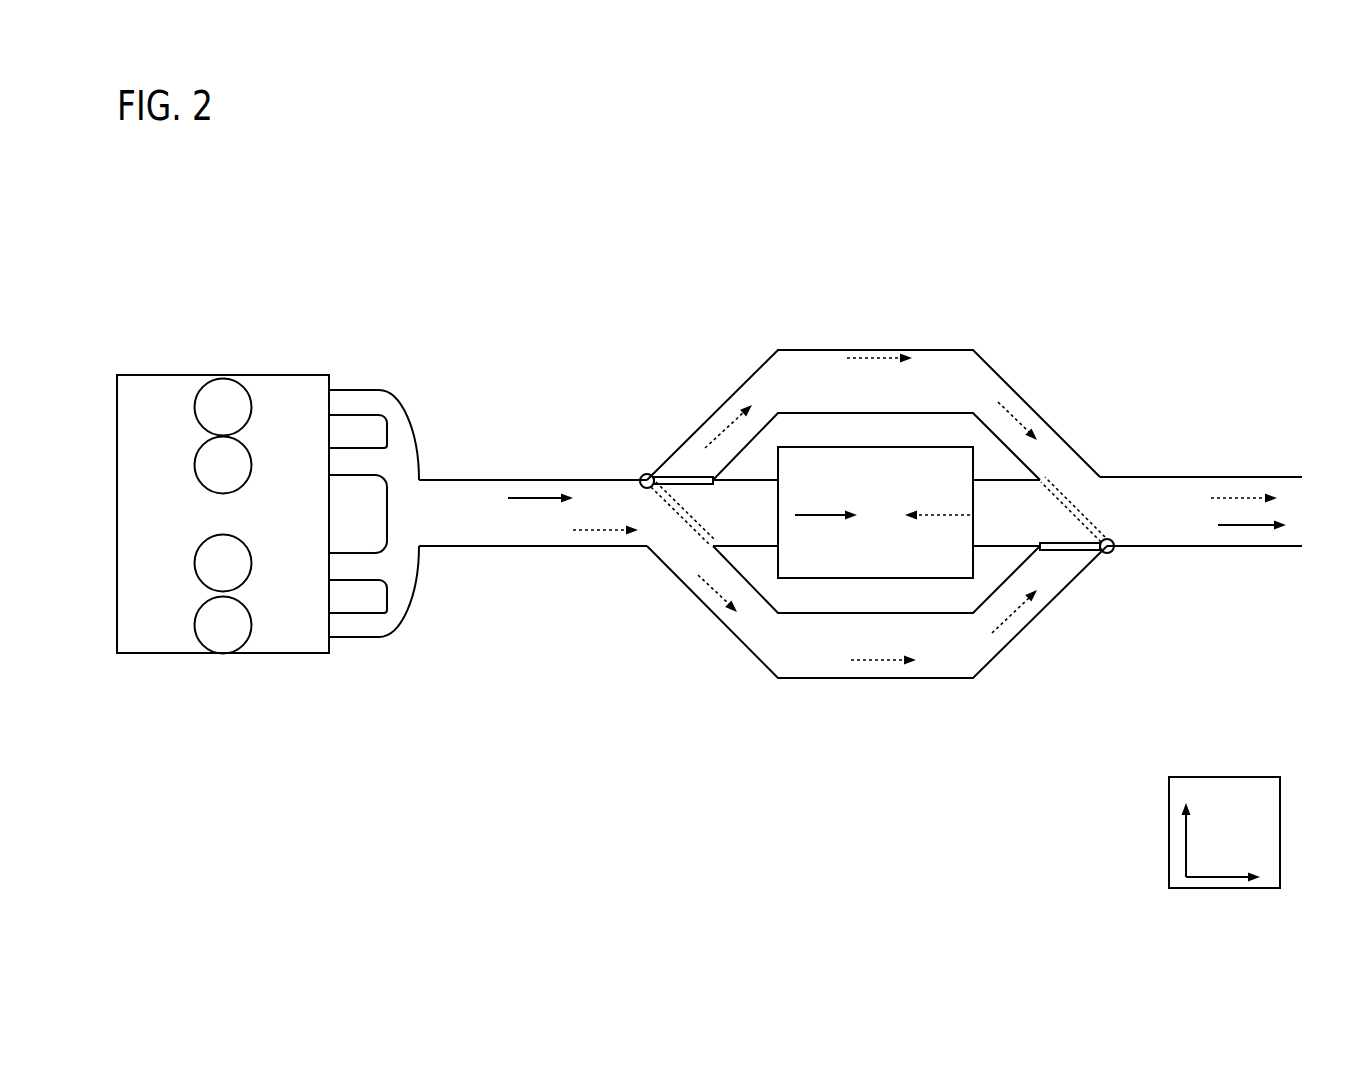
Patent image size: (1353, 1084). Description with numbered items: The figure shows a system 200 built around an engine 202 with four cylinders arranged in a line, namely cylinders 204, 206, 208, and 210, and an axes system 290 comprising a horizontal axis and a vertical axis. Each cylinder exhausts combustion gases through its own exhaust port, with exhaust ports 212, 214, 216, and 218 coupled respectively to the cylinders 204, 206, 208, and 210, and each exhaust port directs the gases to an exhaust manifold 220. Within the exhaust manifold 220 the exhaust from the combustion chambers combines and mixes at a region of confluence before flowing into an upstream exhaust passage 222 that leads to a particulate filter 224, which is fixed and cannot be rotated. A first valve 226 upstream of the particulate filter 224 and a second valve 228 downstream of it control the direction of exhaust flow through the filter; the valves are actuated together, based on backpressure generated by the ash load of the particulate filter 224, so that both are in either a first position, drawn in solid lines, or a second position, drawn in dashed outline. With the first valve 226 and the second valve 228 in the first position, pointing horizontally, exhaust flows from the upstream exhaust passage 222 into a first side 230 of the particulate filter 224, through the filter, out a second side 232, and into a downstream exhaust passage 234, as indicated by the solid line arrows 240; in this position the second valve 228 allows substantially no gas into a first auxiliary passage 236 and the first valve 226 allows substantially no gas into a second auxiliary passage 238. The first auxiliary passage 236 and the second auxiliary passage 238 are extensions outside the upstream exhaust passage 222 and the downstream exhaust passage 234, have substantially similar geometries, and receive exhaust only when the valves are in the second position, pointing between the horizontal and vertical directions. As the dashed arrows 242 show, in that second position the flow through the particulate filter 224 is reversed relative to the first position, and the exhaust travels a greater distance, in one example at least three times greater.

The system 200 is at (316, 204).
The engine 202 is at (153, 375).
The cylinder 204 is at (237, 417).
The cylinder 206 is at (237, 475).
The cylinder 208 is at (237, 573).
The cylinder 210 is at (237, 635).
The exhaust port 212 is at (343, 390).
The exhaust port 214 is at (335, 477).
The exhaust port 216 is at (332, 552).
The exhaust port 218 is at (343, 637).
The exhaust manifold 220 is at (459, 647).
The upstream exhaust passage 222 is at (530, 540).
The particulate filter 224 is at (891, 491).
The first valve 226 is at (673, 477).
The second valve 228 is at (1072, 550).
The first side 230 is at (778, 522).
The second side 232 is at (973, 530).
The downstream exhaust passage 234 is at (1194, 515).
The first auxiliary passage 236 is at (891, 653).
The second auxiliary passage 238 is at (891, 395).
The solid line arrows 240 is at (537, 497).
The dashed arrows 242 is at (605, 532).
The axes system 290 is at (1257, 777).